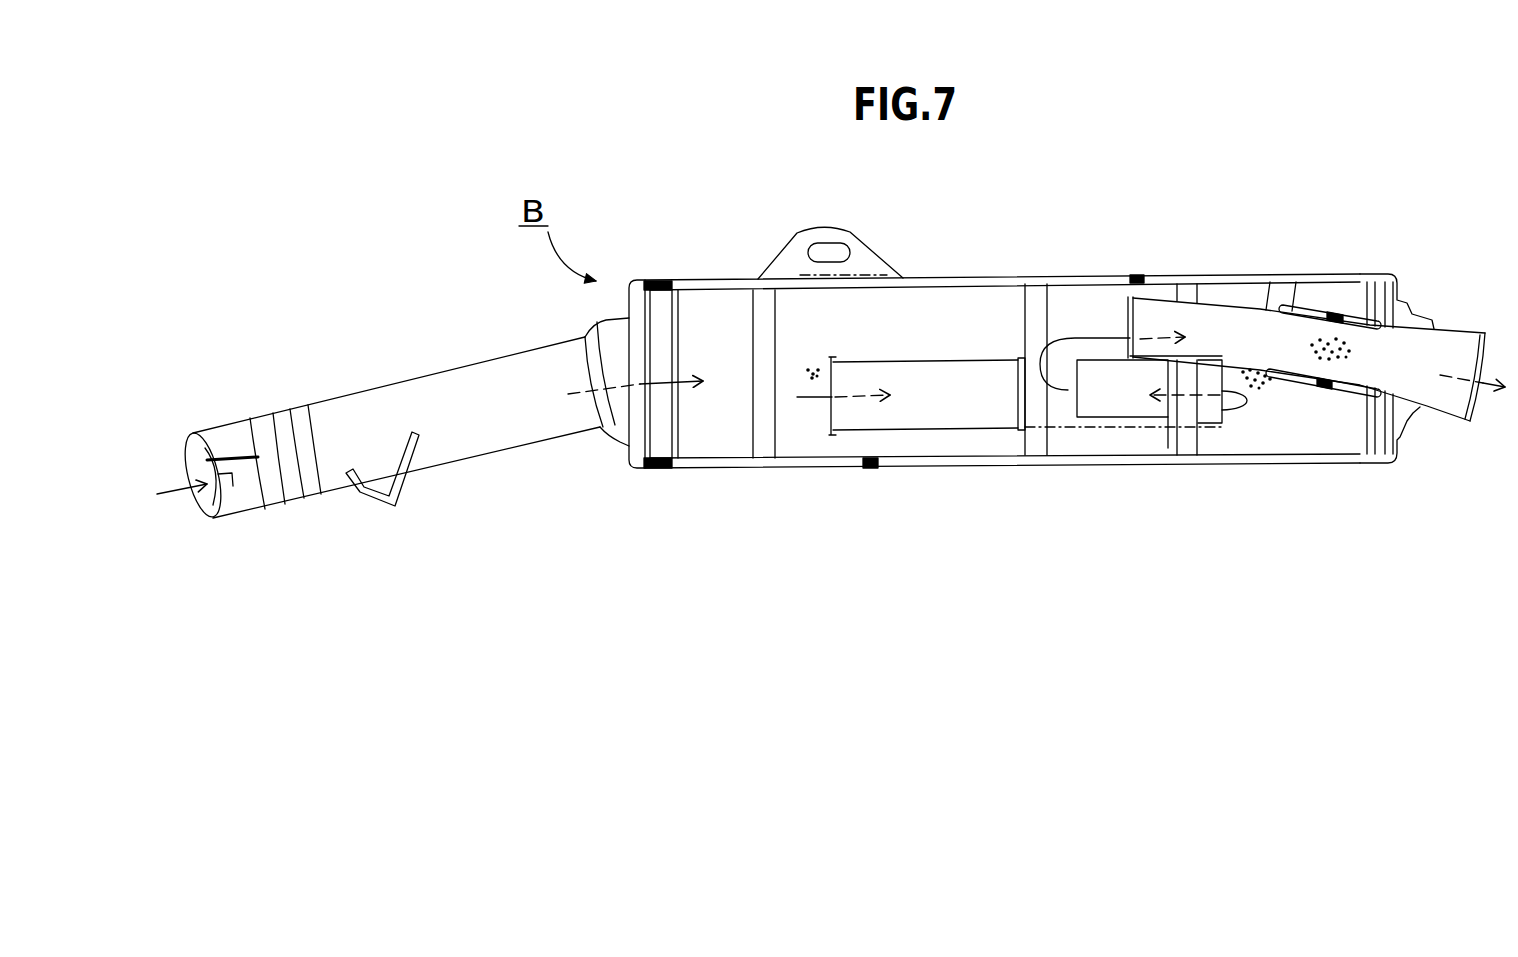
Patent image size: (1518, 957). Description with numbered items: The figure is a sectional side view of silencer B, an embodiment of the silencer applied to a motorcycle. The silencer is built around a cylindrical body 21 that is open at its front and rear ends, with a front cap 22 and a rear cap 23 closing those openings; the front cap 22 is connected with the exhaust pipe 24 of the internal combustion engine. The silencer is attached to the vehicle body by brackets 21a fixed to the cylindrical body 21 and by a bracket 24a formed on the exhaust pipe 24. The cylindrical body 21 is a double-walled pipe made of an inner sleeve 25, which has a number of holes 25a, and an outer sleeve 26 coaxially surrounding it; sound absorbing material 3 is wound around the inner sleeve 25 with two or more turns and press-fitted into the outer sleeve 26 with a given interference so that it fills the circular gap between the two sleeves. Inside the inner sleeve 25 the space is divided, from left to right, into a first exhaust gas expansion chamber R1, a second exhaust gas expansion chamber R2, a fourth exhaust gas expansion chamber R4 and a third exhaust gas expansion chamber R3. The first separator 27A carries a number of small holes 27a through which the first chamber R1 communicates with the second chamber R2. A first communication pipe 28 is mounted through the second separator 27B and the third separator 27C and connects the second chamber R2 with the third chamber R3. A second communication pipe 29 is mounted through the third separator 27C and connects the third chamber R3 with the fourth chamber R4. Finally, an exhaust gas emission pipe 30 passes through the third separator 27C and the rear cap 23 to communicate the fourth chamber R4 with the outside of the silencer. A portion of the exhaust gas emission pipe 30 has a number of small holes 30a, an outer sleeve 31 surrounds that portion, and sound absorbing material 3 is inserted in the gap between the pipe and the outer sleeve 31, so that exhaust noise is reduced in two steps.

The sound absorbing material 3 is at (870, 464).
The cylindrical body 21 is at (976, 428).
The brackets 21a is at (885, 262).
The front cap 22 is at (628, 458).
The rear cap 23 is at (1407, 431).
The exhaust pipe 24 is at (435, 468).
The bracket 24a is at (405, 433).
The inner sleeve 25 is at (1222, 453).
The holes 25a is at (1263, 380).
The outer sleeve 26 is at (1253, 463).
The first separator 27A is at (782, 317).
The small holes 27a is at (782, 435).
The second separator 27B is at (1048, 316).
The third separator 27C is at (1207, 293).
The first communication pipe 28 is at (976, 433).
The second communication pipe 29 is at (1105, 418).
The exhaust gas emission pipe 30 is at (1257, 307).
The small holes 30a is at (1343, 342).
The outer sleeve 31 is at (1303, 310).
The first exhaust gas expansion chamber R1 is at (708, 440).
The second exhaust gas expansion chamber R2 is at (813, 433).
The third exhaust gas expansion chamber R3 is at (1333, 440).
The fourth exhaust gas expansion chamber R4 is at (1137, 442).